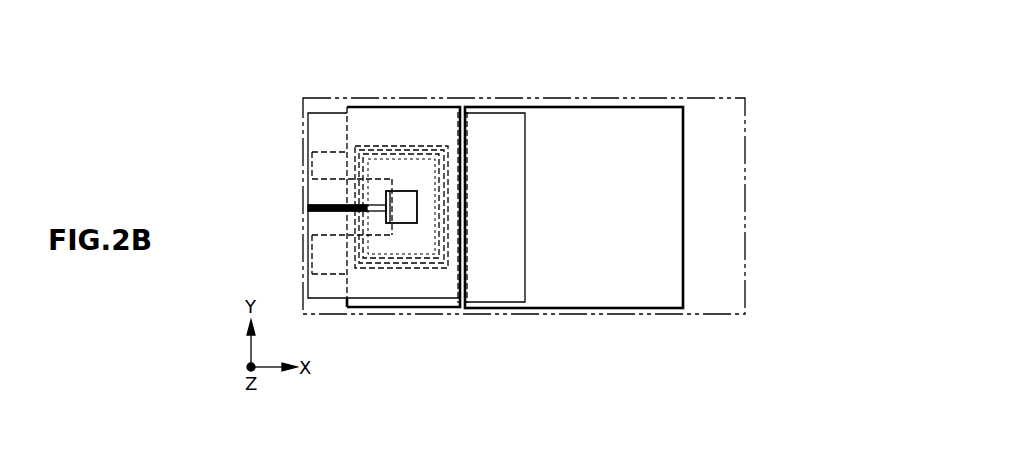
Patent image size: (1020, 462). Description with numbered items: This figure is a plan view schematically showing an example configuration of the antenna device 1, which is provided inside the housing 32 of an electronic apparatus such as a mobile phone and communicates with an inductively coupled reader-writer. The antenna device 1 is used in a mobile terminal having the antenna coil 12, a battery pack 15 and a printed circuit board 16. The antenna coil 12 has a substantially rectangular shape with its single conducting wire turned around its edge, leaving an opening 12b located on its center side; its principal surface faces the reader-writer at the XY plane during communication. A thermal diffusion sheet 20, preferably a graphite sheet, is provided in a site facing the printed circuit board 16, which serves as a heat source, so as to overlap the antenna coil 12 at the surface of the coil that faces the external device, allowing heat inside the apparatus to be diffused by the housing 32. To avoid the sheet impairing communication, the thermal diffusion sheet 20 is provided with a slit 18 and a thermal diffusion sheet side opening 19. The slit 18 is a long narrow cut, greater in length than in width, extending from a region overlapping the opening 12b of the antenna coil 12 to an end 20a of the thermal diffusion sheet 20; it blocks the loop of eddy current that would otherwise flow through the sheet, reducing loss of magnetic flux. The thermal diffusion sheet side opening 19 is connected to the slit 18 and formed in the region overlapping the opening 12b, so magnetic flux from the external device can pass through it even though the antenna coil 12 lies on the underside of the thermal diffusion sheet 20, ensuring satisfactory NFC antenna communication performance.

The antenna device 1 is at (708, 75).
The antenna coil 12 is at (378, 143).
The opening 12b is at (410, 165).
The battery pack 15 is at (640, 128).
The printed circuit board 16 is at (440, 113).
The slit 18 is at (333, 207).
The thermal diffusion sheet side opening 19 is at (402, 223).
The thermal diffusion sheet 20 is at (323, 127).
The end of the thermal diffusion sheet 20a is at (308, 167).
The housing 32 is at (745, 155).